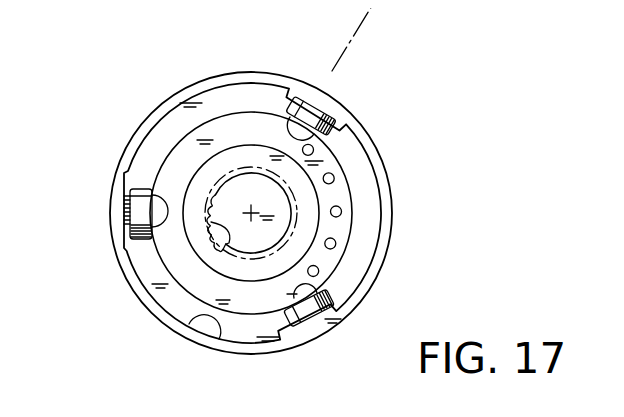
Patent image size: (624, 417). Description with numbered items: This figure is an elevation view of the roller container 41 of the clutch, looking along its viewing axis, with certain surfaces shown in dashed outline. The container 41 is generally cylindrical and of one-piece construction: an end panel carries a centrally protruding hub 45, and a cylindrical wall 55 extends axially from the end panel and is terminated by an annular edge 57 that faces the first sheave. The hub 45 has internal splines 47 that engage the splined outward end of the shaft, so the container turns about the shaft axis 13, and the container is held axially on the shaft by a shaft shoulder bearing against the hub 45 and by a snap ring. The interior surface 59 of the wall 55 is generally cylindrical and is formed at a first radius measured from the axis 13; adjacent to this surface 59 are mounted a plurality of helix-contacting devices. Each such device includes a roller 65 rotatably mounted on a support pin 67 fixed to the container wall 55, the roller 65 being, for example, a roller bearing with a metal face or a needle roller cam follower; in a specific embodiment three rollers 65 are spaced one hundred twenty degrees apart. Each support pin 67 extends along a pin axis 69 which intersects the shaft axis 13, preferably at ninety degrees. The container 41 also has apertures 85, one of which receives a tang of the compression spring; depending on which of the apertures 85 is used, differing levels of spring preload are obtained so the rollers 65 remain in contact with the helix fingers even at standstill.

The roller container 41 is at (118, 97).
The hub 45 is at (239, 154).
The pin axis 69 is at (365, 13).
The apertures 85 is at (331, 176).
The cylindrical wall 55 is at (393, 223).
The shaft axis 13 is at (249, 212).
The support pin 67 is at (128, 212).
The roller 65 is at (132, 250).
The internal splines 47 is at (223, 245).
The interior surface 59 is at (210, 352).
The annular edge 57 is at (242, 346).